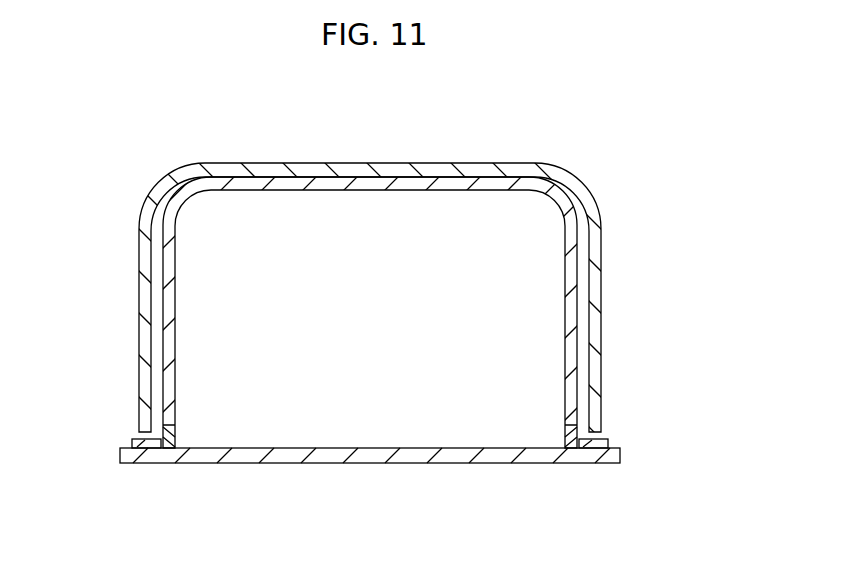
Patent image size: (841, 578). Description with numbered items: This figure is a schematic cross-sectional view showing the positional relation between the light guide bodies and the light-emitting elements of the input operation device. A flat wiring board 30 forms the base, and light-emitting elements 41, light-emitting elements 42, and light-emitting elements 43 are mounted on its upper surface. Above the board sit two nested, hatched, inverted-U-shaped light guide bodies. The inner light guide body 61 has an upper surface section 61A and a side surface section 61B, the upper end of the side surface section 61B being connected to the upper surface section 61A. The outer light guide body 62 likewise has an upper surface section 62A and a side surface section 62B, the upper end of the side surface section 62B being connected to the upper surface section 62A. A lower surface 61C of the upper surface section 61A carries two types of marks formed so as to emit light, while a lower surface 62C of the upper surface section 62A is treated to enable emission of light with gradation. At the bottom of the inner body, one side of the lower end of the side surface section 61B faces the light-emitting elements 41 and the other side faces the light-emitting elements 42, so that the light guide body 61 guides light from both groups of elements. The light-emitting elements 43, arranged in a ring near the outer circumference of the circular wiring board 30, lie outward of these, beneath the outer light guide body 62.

The wiring board 30 is at (412, 453).
The light-emitting elements 41 is at (565, 447).
The light-emitting elements 42 is at (169, 446).
The light-emitting elements 43 is at (143, 442).
The light guide body 61 is at (568, 238).
The upper surface section 61A is at (535, 203).
The side surface section 61B is at (187, 218).
The lower surface 61C is at (330, 190).
The light guide body 62 is at (478, 164).
The upper surface section 62A is at (592, 160).
The side surface section 62B is at (116, 179).
The lower surface 62C is at (265, 177).